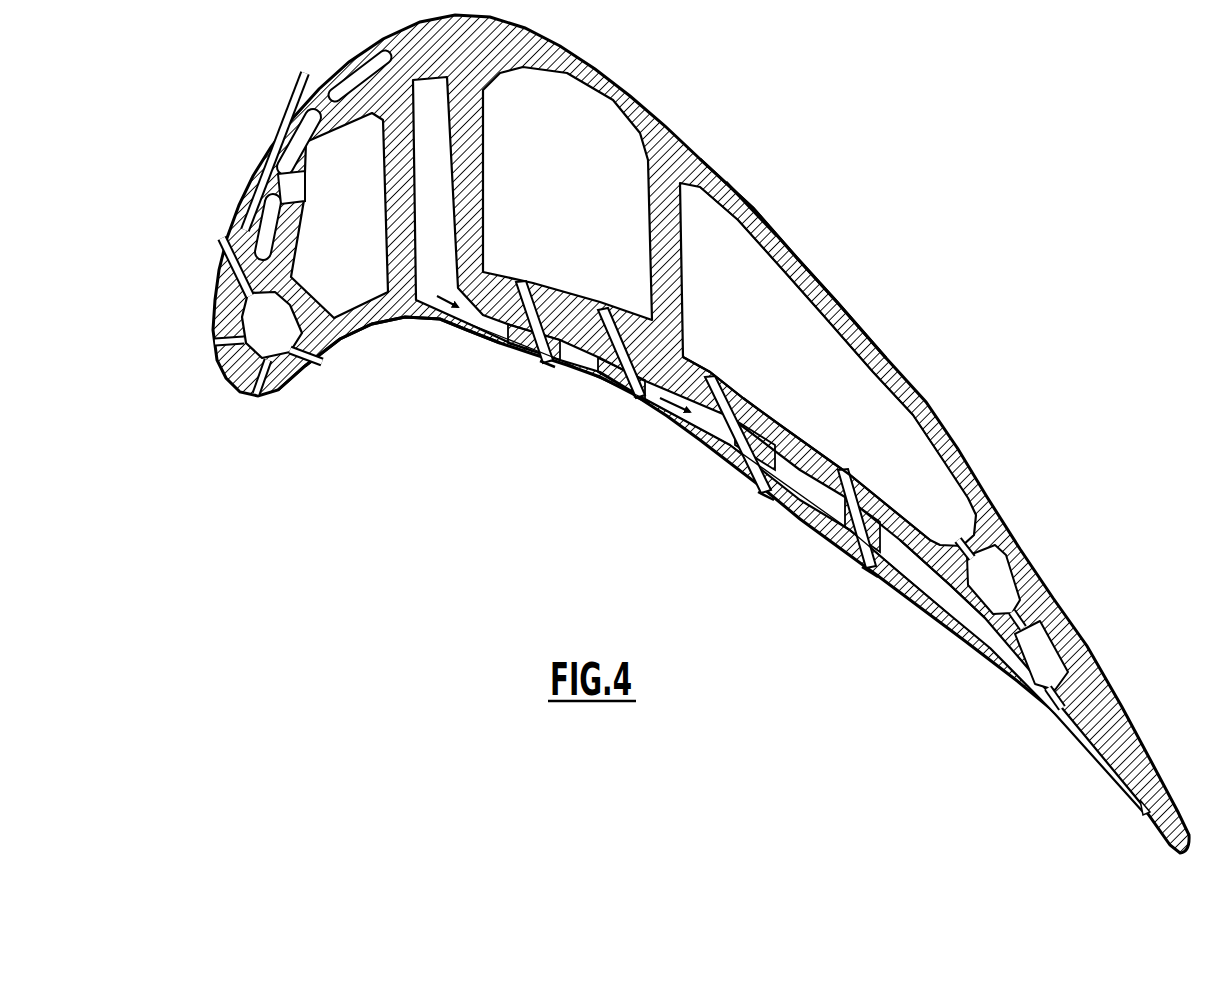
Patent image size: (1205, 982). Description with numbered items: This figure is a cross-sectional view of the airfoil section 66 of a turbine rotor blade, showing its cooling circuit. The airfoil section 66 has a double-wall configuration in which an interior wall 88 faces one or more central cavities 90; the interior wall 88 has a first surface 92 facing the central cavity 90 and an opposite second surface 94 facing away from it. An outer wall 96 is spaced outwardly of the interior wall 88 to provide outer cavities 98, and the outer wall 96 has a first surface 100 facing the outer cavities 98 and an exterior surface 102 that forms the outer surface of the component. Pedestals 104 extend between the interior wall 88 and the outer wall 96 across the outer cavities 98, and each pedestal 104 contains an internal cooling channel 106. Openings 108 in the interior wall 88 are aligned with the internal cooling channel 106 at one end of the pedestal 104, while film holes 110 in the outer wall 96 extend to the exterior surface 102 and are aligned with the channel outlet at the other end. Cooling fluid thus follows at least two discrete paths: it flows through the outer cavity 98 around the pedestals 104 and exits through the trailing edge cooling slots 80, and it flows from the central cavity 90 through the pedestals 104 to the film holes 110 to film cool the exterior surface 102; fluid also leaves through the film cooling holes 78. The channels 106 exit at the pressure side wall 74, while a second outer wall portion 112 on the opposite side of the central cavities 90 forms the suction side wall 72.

The airfoil section 66 is at (176, 112).
The suction side wall 72 is at (676, 128).
The pressure side wall 74 is at (381, 330).
The film cooling holes 78 is at (240, 163).
The trailing edge cooling slots 80 is at (988, 650).
The interior wall 88 is at (493, 285).
The central cavity 90 is at (573, 140).
The first surface 92 is at (817, 450).
The second surface 94 is at (807, 488).
The outer wall 96 is at (903, 595).
The outer cavity 98 is at (578, 378).
The first surface 100 is at (1028, 550).
The exterior surface 102 is at (879, 568).
The pedestal 104 is at (500, 343).
The internal cooling channel 106 is at (612, 338).
The openings 108 is at (525, 298).
The film holes 110 is at (542, 364).
The second outer wall portion 112 is at (750, 210).